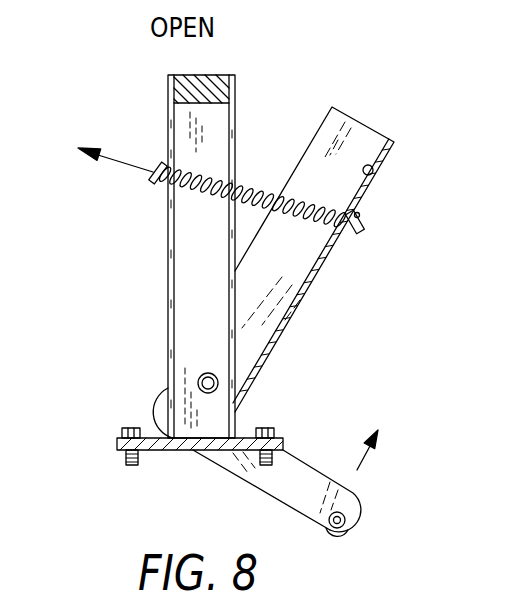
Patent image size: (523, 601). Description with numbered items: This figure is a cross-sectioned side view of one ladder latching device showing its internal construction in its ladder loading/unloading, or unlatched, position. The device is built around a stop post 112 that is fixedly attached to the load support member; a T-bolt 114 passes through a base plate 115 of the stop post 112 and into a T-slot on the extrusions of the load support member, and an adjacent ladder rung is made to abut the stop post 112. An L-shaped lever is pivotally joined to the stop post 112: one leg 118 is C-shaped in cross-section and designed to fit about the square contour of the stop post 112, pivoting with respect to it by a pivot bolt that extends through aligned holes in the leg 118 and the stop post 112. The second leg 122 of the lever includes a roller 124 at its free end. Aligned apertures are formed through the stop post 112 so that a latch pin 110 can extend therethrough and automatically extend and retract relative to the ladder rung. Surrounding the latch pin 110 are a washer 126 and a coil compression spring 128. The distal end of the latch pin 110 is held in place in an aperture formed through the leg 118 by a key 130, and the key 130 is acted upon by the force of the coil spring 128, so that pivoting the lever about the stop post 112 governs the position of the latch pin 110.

The latch pin 110 is at (158, 185).
The stop post 112 is at (168, 323).
The T-bolt 114 is at (130, 428).
The base plate 115 is at (190, 448).
The leg 118 is at (297, 318).
The second leg 122 is at (310, 492).
The roller 124 is at (350, 528).
The washer 126 is at (220, 178).
The coil compression spring 128 is at (252, 205).
The key 130 is at (358, 230).